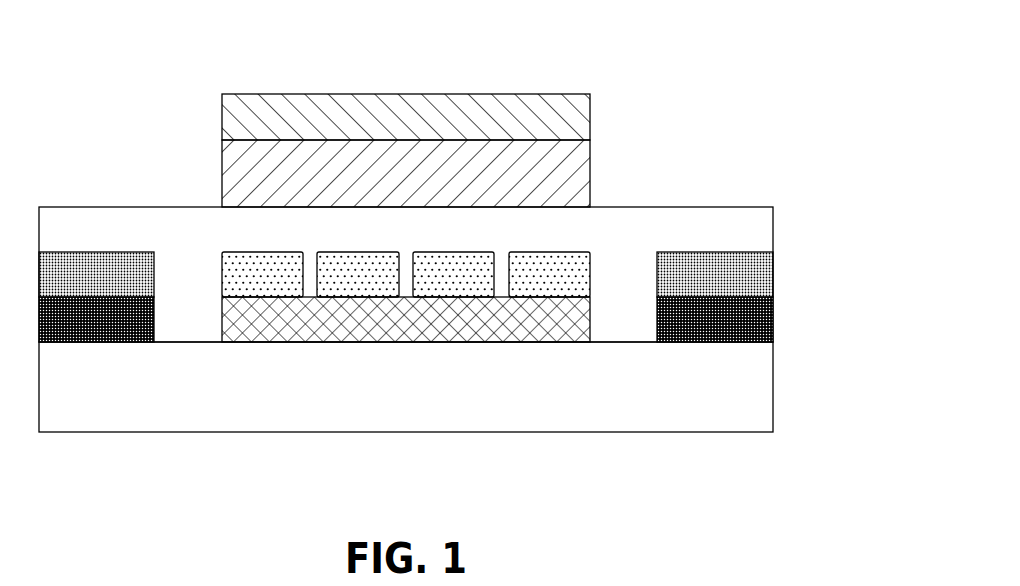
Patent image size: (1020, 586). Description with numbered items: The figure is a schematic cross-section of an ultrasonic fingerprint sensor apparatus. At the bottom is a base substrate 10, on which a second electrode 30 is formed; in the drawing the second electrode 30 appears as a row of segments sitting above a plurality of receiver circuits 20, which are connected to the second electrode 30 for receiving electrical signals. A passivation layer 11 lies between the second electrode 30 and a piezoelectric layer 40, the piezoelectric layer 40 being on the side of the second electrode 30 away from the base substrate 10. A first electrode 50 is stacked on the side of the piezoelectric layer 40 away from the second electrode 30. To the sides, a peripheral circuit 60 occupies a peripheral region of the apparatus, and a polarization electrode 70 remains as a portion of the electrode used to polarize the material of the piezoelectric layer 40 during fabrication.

The base substrate 10 is at (795, 387).
The passivation layer 11 is at (797, 228).
The receiver circuits 20 is at (412, 332).
The second electrode 30 is at (552, 274).
The piezoelectric layer 40 is at (267, 175).
The first electrode 50 is at (410, 117).
The peripheral circuit 60 is at (88, 292).
The polarization electrode 70 is at (713, 273).